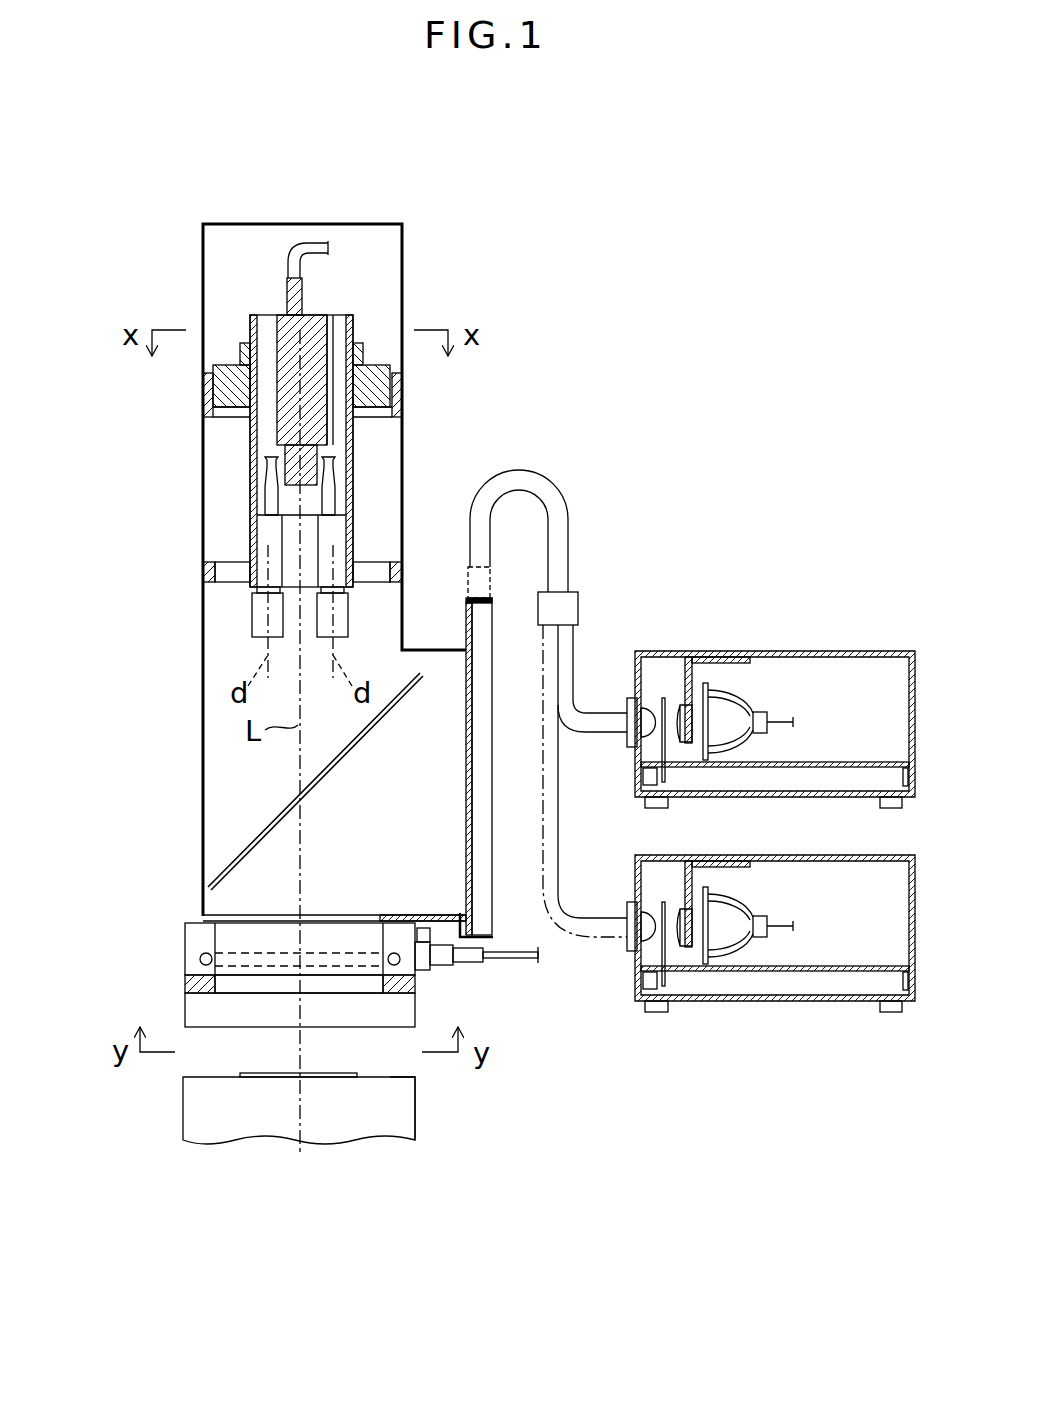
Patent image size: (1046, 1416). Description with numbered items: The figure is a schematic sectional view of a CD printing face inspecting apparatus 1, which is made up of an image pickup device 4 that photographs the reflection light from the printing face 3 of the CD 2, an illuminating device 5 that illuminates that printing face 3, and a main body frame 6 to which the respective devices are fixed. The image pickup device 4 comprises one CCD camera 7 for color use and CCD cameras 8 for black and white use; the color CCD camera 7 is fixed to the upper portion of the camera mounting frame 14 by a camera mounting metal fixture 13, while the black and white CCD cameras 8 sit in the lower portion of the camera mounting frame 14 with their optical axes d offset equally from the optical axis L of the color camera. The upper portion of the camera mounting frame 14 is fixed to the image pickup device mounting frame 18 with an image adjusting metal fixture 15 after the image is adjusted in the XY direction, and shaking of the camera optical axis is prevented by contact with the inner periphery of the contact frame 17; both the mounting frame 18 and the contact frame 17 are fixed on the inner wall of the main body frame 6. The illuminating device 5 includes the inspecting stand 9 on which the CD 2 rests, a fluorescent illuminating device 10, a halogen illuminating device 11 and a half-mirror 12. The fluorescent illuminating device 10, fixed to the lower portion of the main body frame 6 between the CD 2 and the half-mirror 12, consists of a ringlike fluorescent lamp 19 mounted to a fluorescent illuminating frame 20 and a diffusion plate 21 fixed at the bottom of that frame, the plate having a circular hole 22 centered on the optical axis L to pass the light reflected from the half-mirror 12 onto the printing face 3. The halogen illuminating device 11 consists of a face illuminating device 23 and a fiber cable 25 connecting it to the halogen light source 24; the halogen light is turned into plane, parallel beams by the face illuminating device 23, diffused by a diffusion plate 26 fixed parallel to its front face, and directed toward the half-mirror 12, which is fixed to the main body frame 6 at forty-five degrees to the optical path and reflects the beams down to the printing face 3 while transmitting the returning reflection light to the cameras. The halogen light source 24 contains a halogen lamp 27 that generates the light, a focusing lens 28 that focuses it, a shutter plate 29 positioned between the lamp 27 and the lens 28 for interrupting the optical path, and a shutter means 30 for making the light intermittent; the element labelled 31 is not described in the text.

The CD printing face inspecting apparatus 1 is at (345, 515).
The CD 2 is at (258, 1076).
The printing face 3 is at (372, 1076).
The image pickup device 4 is at (233, 408).
The illuminating device 5 is at (590, 572).
The main body frame 6 is at (402, 262).
The CCD camera for color use 7 is at (285, 355).
The CCD camera for black and white use 8 is at (258, 528).
The inspecting stand 9 is at (397, 1123).
The fluorescent illuminating device 10 is at (307, 1049).
The halogen illuminating device 11 is at (522, 918).
The half-mirror 12 is at (212, 882).
The camera mounting metal fixture 13 is at (302, 320).
The camera mounting frame 14 is at (350, 327).
The image adjusting metal fixture 15 is at (402, 363).
The contact frame 17 is at (232, 567).
The image pickup device mounting frame 18 is at (402, 405).
The fluorescent lamp 19 is at (358, 962).
The fluorescent illuminating frame 20 is at (200, 1008).
The diffusion plate 21 is at (186, 982).
The circular hole 22 is at (225, 992).
The face illuminating device 23 is at (480, 803).
The halogen light source 24 is at (743, 837).
The fiber cable 25 is at (538, 472).
The diffusion plate 26 is at (466, 822).
The halogen lamp 27 is at (737, 718).
The focusing lens 28 is at (648, 718).
The shutter plate 29 is at (663, 710).
The shutter means 30 is at (676, 779).
The connector 31 is at (650, 779).